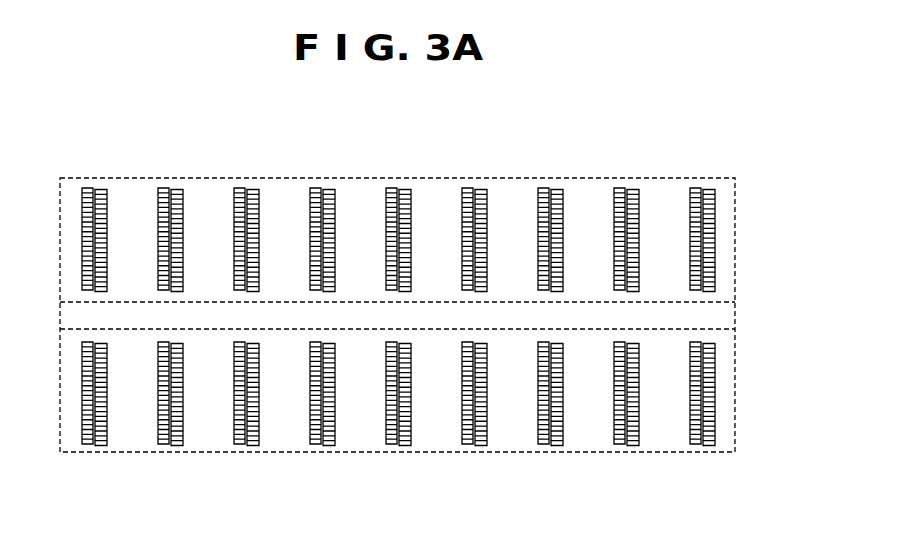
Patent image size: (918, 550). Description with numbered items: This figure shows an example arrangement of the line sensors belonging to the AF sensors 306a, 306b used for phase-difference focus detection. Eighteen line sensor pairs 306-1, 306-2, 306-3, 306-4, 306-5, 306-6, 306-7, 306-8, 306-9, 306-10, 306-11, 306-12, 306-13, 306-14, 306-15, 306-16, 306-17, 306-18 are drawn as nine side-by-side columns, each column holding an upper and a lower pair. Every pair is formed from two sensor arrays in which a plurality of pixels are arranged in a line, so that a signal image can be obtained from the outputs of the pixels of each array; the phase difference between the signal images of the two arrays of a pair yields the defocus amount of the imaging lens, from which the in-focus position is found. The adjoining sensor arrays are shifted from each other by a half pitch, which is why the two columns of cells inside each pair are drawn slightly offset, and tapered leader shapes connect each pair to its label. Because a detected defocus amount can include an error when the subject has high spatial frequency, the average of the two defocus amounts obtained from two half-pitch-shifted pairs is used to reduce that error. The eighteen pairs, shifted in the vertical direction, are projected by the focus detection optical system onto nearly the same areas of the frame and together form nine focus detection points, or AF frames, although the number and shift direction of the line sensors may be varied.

The AF sensor 306a is at (725, 178).
The AF sensor 306b is at (72, 453).
The line sensor pair 306-1 is at (82, 375).
The line sensor pair 306-2 is at (107, 258).
The line sensor pair 306-3 is at (158, 375).
The line sensor pair 306-4 is at (183, 258).
The line sensor pair 306-5 is at (234, 375).
The line sensor pair 306-6 is at (259, 258).
The line sensor pair 306-7 is at (310, 375).
The line sensor pair 306-8 is at (335, 258).
The line sensor pair 306-9 is at (386, 375).
The line sensor pair 306-10 is at (411, 258).
The line sensor pair 306-11 is at (462, 375).
The line sensor pair 306-12 is at (487, 258).
The line sensor pair 306-13 is at (538, 375).
The line sensor pair 306-14 is at (563, 258).
The line sensor pair 306-15 is at (614, 375).
The line sensor pair 306-16 is at (639, 258).
The line sensor pair 306-17 is at (690, 375).
The line sensor pair 306-18 is at (715, 258).